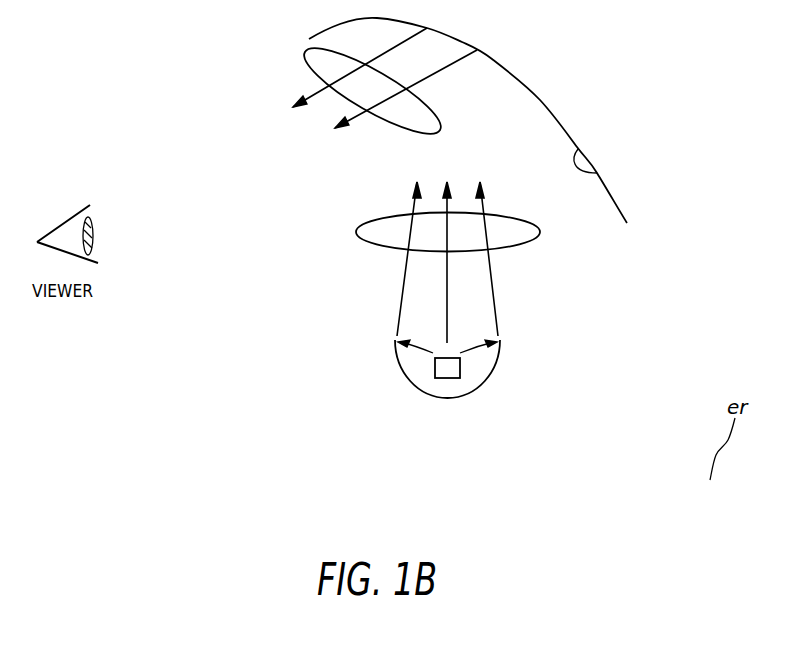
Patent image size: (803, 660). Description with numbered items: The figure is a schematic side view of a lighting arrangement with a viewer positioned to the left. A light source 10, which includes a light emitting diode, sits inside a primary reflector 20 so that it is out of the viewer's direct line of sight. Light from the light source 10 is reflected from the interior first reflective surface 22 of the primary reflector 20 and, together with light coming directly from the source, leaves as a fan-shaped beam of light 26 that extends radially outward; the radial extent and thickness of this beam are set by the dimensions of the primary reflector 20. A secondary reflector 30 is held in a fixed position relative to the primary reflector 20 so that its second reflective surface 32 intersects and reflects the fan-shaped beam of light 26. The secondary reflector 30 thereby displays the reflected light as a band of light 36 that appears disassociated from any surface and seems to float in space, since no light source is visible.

The light source 10 is at (448, 378).
The primary reflector 20 is at (482, 383).
The first reflective surface 22 is at (487, 367).
The fan-shaped beam of light 26 is at (540, 232).
The secondary reflector 30 is at (547, 102).
The second reflective surface 32 is at (597, 173).
The band of light 36 is at (305, 52).